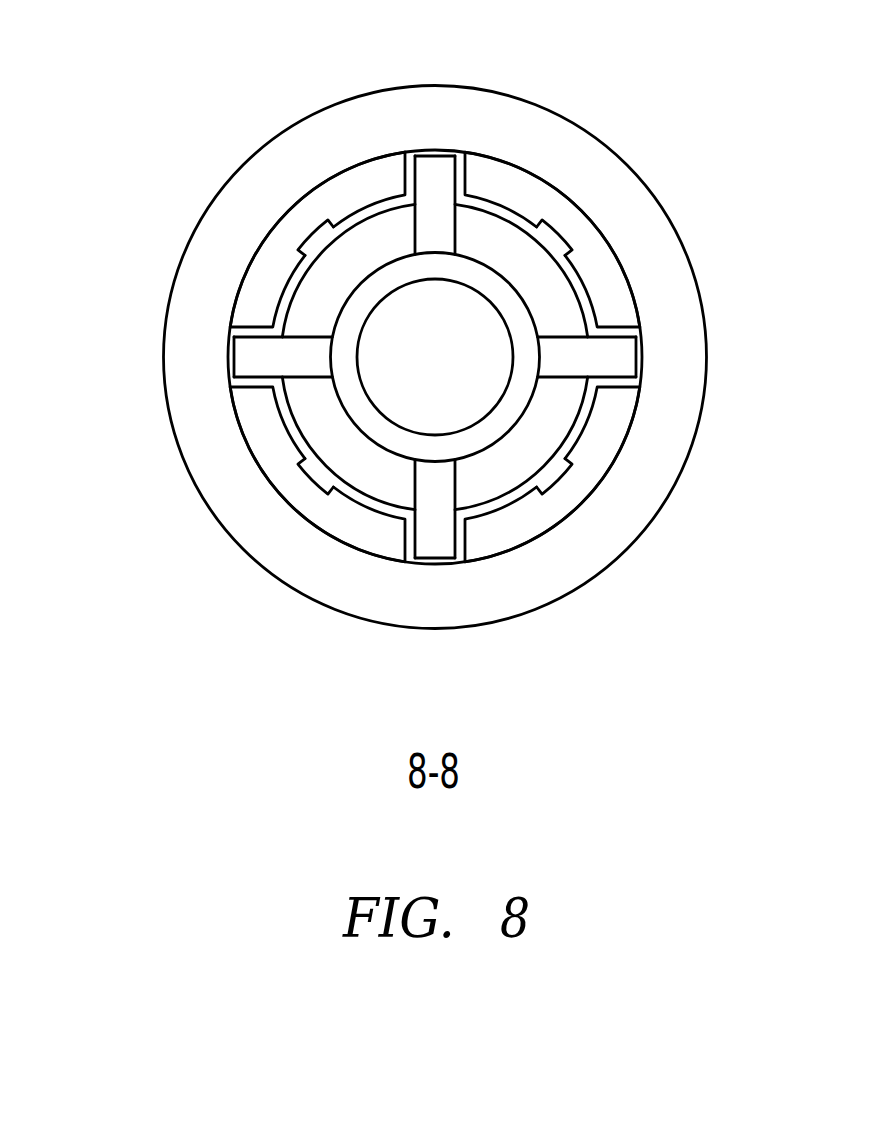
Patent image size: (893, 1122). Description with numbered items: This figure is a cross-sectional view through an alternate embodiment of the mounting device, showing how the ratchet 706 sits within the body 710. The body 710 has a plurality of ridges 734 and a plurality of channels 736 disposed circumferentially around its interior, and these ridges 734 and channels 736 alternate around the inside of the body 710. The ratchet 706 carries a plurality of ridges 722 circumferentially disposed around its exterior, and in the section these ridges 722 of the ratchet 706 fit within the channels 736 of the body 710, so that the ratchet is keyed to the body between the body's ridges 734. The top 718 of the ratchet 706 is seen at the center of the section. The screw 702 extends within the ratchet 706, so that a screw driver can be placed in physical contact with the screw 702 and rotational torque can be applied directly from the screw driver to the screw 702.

The screw 702 is at (552, 293).
The ratchet 706 is at (310, 241).
The body 710 is at (623, 157).
The top 718 is at (510, 403).
The ridges 722 is at (436, 170).
The ridges 734 is at (455, 352).
The channels 736 is at (428, 153).